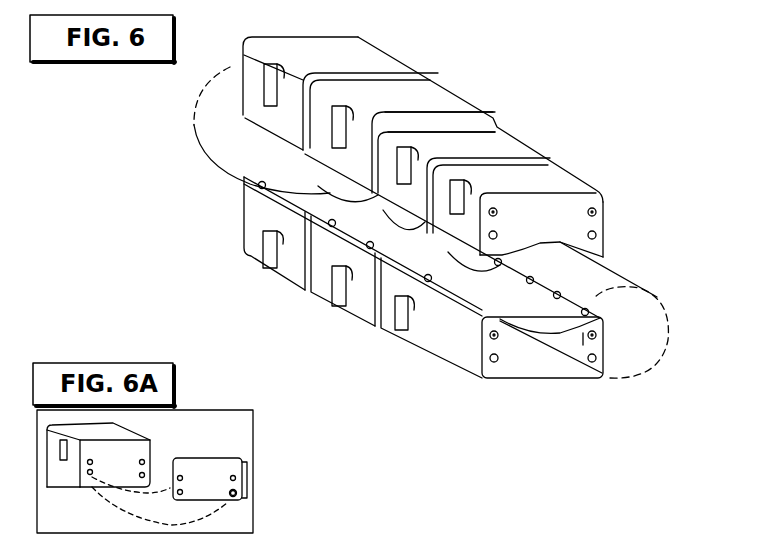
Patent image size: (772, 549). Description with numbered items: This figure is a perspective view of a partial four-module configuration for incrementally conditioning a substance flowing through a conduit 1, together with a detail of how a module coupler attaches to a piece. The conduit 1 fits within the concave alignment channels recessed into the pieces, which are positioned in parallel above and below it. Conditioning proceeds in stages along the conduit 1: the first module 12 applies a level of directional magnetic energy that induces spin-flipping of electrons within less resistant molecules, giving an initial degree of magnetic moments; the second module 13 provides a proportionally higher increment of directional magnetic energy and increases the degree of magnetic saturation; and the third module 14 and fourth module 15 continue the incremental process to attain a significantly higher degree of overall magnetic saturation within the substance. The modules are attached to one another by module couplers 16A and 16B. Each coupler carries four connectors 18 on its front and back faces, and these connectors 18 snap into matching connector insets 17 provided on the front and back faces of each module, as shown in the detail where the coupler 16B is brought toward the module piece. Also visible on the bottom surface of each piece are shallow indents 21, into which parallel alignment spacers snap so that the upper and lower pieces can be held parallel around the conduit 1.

In FIG. 6, the conduit 1 is at (628, 283).
In FIG. 6, the first module 12 is at (585, 180).
In FIG. 6, the second module 13 is at (523, 143).
In FIG. 6, the third module 14 is at (460, 93).
In FIG. 6, the fourth module 15 is at (398, 57).
In FIG. 6A, the fourth module 15 is at (70, 470).
In FIG. 6, the module coupler 16A is at (500, 121).
In FIG. 6, the module coupler 16B is at (433, 75).
In FIG. 6A, the module coupler 16B is at (193, 457).
In FIG. 6, the connector insets 17 is at (596, 235).
In FIG. 6A, the connector insets 17 is at (90, 480).
In FIG. 6A, the connectors 18 is at (233, 476).
In FIG. 6, the shallow indents 21 is at (300, 204).